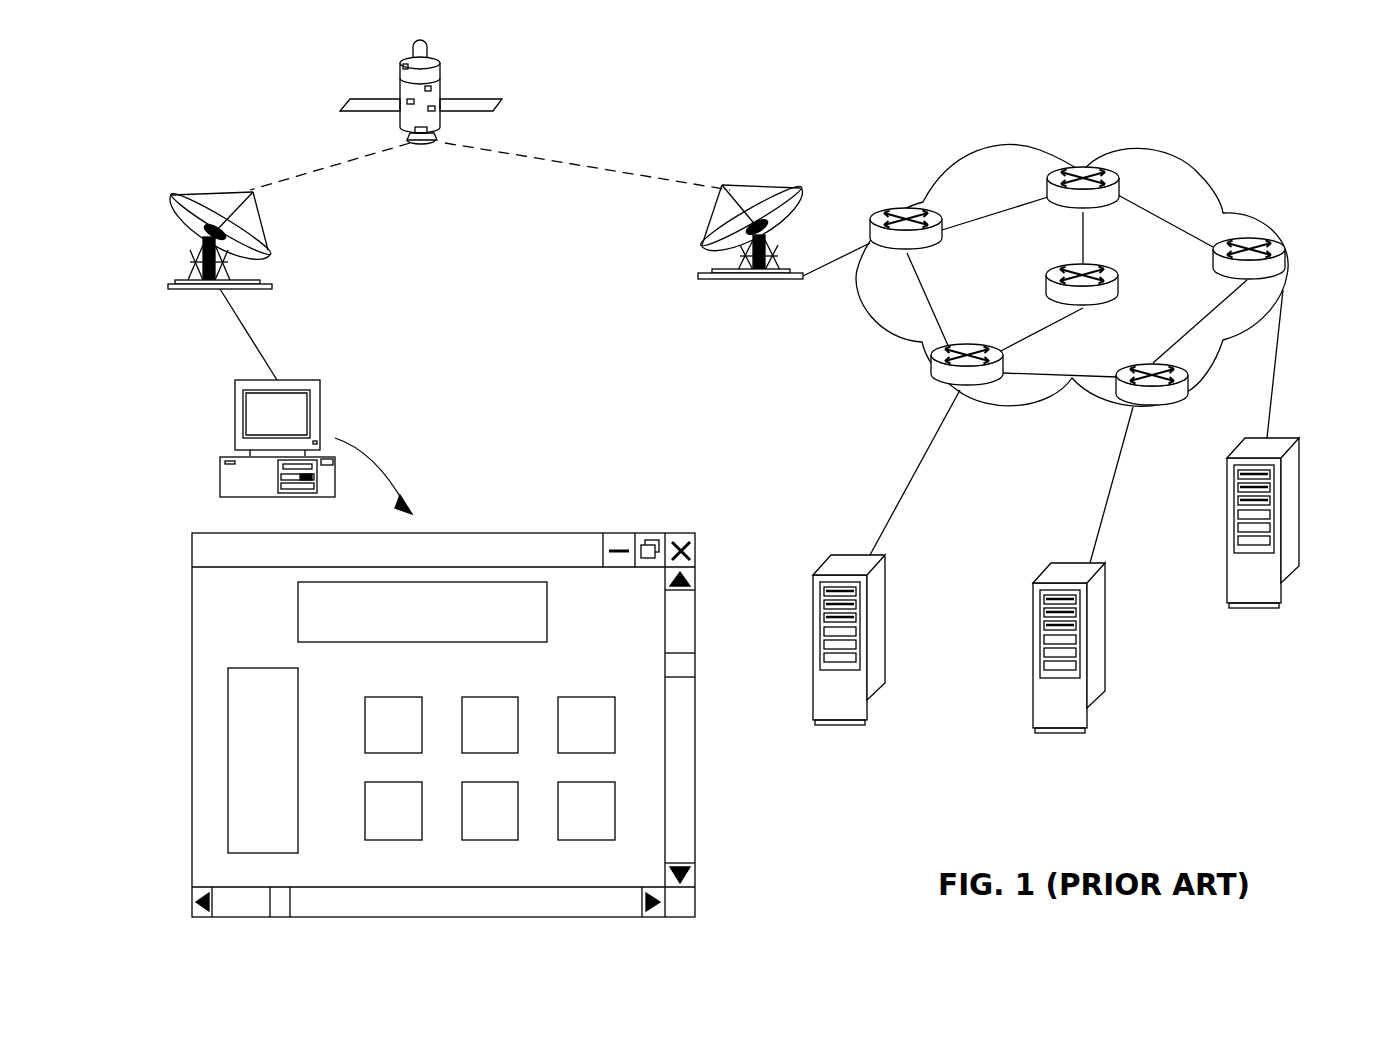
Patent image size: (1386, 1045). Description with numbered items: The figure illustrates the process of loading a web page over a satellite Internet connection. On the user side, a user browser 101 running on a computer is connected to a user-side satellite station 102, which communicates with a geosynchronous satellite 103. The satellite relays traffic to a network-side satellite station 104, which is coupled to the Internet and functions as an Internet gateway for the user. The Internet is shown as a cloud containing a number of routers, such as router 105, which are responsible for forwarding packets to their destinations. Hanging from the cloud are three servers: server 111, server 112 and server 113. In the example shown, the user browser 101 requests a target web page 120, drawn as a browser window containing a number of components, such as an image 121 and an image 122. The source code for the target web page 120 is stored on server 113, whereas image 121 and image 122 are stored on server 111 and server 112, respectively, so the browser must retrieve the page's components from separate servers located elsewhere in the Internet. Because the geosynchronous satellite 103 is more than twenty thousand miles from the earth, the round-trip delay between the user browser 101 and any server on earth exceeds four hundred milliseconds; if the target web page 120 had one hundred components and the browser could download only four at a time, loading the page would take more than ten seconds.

The user browser 101 is at (329, 424).
The user-side satellite station 102 is at (269, 238).
The geosynchronous satellite 103 is at (376, 92).
The network-side satellite station 104 is at (704, 230).
The router 105 is at (901, 200).
The server 111 is at (838, 659).
The server 112 is at (1067, 663).
The server 113 is at (1267, 537).
The target web page 120 is at (443, 677).
The image 121 is at (422, 612).
The image 122 is at (263, 760).